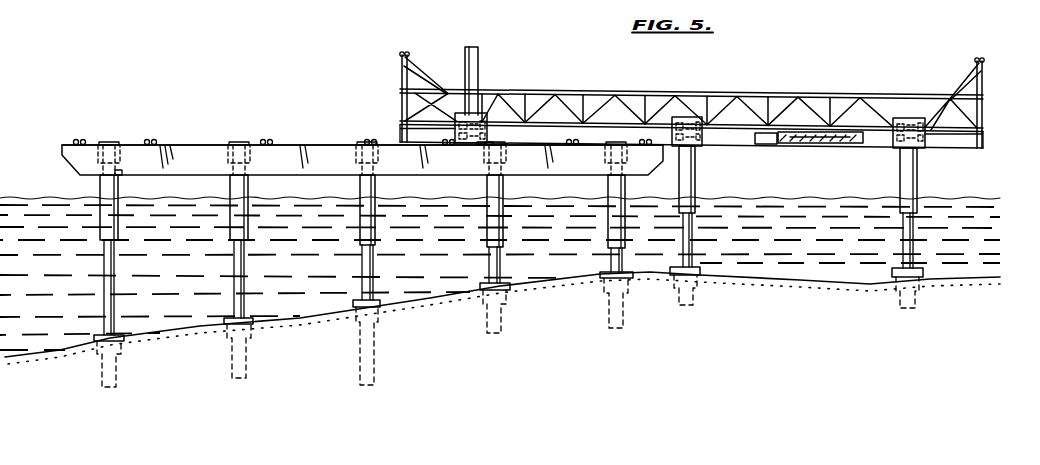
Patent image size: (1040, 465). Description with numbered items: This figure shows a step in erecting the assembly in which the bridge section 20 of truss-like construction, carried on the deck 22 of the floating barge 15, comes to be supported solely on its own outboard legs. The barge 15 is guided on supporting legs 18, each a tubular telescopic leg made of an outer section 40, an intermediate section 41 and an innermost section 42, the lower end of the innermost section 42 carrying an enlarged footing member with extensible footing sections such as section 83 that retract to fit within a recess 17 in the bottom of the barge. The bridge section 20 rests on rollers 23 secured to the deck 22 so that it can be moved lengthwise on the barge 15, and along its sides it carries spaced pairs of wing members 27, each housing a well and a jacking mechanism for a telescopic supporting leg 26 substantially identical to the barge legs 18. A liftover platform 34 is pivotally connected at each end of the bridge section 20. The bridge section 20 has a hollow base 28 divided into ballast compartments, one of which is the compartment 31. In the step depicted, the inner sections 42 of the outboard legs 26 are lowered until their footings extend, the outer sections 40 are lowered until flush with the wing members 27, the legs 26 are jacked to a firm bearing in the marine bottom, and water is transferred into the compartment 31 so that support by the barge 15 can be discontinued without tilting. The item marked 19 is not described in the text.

The buoyant body 15 is at (320, 151).
The recess 17 is at (118, 172).
The supporting leg 18 is at (257, 188).
The pile cap bracket 19 is at (118, 148).
The bridge section 20 is at (783, 92).
The deck 22 is at (233, 137).
The rollers 23 is at (78, 140).
The telescopic supporting leg 26 is at (475, 47).
The wing member 27 is at (487, 126).
The hollow base 28 is at (759, 146).
The ballast compartment 31 is at (824, 147).
The liftover platform 34 is at (402, 118).
The outer section 40 is at (378, 191).
The intermediate section 41 is at (110, 336).
The innermost section 42 is at (244, 366).
The footing section 83 is at (356, 310).